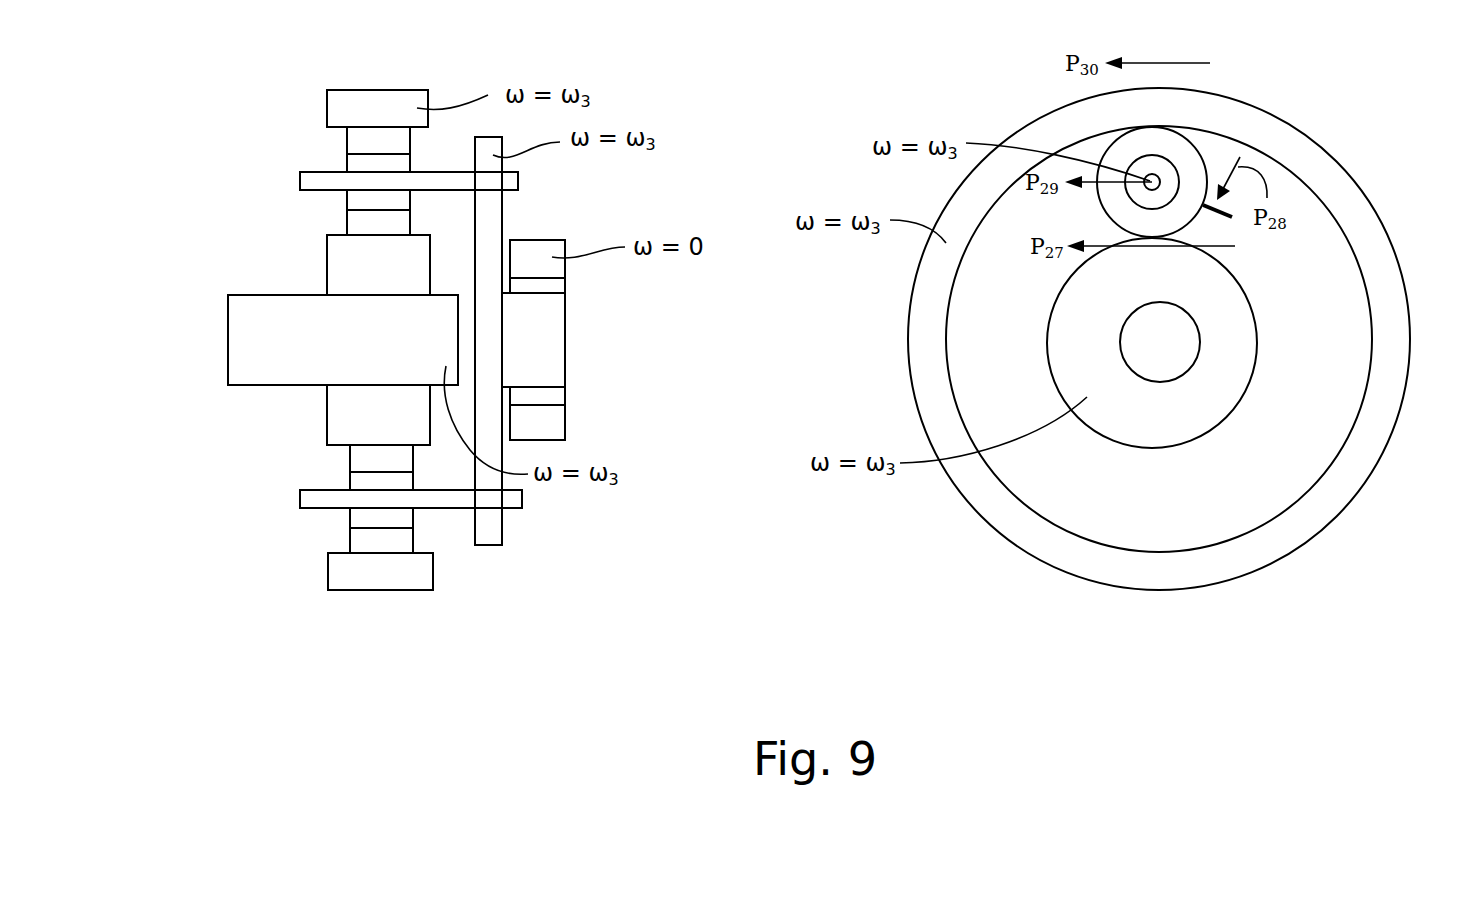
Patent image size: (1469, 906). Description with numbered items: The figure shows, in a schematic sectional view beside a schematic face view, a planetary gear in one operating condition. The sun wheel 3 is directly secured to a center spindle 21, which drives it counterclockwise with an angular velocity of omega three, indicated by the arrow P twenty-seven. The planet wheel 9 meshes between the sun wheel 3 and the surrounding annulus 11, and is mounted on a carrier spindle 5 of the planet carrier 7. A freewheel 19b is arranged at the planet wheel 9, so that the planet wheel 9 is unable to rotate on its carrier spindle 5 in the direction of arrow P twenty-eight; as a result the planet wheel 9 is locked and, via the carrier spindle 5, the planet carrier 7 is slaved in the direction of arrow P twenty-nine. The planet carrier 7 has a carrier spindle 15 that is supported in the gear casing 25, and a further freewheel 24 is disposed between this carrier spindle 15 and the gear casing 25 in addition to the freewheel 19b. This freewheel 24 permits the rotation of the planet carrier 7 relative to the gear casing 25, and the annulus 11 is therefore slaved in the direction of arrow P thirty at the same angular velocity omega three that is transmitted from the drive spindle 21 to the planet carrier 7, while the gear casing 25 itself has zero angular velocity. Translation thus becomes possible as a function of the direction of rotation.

The sun wheel 3 is at (350, 276).
The carrier spindle 5 is at (312, 183).
The planet carrier 7 is at (492, 203).
The planet wheel 9 is at (360, 138).
The annulus 11 is at (378, 100).
The carrier spindle of the planet carrier 15 is at (558, 342).
The freewheel 19b is at (358, 202).
The center spindle 21 is at (243, 343).
The freewheel 24 is at (557, 395).
The gear casing 25 is at (553, 422).